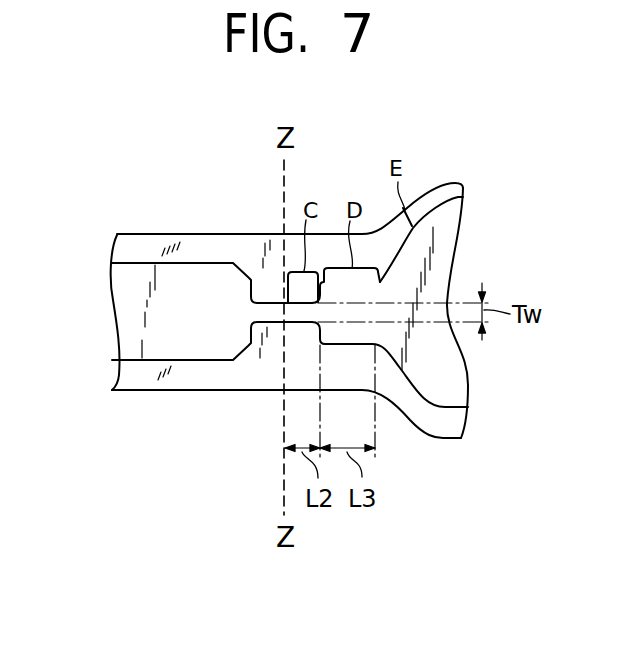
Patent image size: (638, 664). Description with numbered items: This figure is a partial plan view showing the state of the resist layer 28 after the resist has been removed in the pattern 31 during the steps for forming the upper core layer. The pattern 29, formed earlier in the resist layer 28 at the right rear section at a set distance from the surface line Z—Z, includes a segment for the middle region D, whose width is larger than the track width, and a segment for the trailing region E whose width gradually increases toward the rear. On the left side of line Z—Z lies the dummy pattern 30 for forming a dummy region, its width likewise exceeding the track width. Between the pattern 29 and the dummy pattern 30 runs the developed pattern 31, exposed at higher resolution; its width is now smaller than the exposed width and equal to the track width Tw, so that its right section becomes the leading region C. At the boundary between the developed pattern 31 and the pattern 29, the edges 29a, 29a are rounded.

The resist layer 28 is at (138, 256).
The pattern 29 is at (438, 268).
The edges 29a is at (313, 298).
The dummy pattern 30 is at (132, 300).
The pattern 31 is at (263, 311).